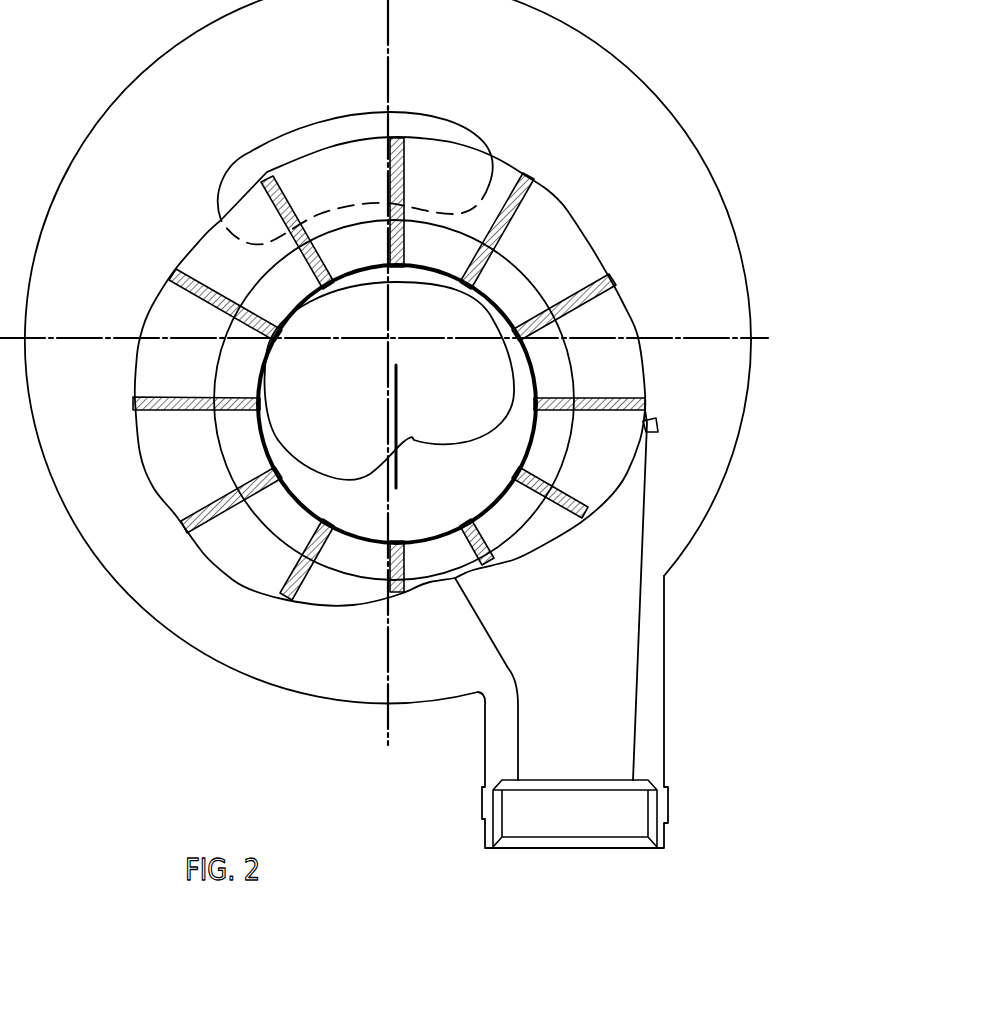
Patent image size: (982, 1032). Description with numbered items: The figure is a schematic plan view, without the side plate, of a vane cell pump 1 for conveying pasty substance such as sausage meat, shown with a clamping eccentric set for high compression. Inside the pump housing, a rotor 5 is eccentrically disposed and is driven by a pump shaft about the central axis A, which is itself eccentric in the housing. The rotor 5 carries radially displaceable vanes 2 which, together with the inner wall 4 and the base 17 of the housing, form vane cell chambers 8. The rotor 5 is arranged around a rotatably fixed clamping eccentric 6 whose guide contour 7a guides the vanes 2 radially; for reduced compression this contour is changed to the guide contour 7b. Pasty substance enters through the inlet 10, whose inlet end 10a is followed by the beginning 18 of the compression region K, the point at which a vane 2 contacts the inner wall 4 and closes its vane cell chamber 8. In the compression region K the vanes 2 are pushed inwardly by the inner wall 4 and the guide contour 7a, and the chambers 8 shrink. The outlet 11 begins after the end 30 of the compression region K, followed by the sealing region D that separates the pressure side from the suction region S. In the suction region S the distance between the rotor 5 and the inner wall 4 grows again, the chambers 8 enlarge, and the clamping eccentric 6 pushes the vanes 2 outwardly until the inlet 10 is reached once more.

The vane cell pump 1 is at (694, 70).
The vanes 2 is at (203, 527).
The inner wall 4 is at (561, 202).
The rotor 5 is at (277, 525).
The clamping eccentric 6 is at (327, 383).
The guide contour 7a is at (347, 275).
The guide contour 7b is at (408, 278).
The vane cell chambers 8 is at (626, 368).
The inlet 10 is at (318, 131).
The inlet end 10a is at (493, 184).
The outlet 11 is at (627, 606).
The base 17 is at (618, 312).
The beginning of the compression region 18 is at (583, 214).
The end of the compression region 30 is at (659, 426).
The axis A is at (413, 386).
The sealing region D is at (443, 580).
The compression region K is at (580, 273).
The suction region S is at (100, 577).